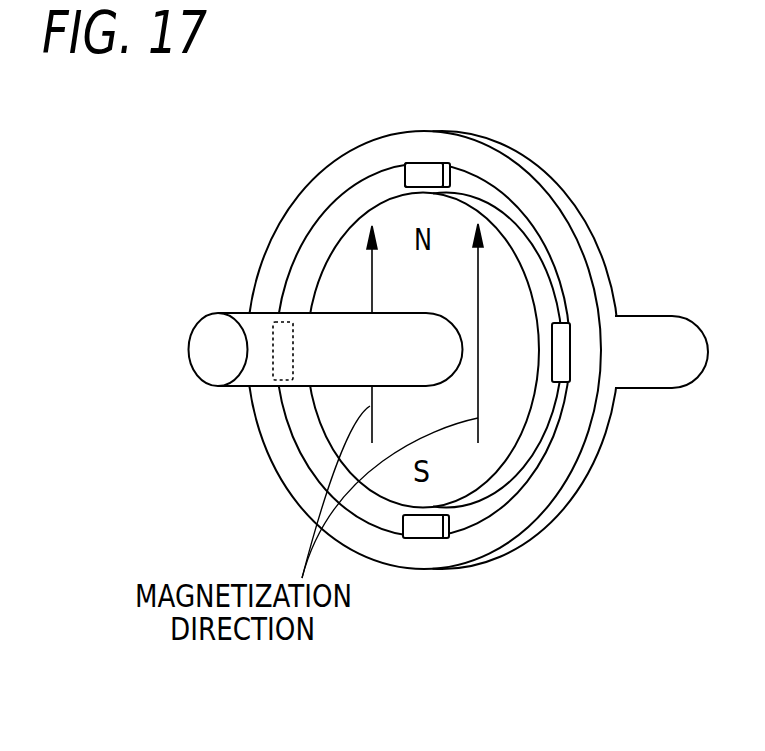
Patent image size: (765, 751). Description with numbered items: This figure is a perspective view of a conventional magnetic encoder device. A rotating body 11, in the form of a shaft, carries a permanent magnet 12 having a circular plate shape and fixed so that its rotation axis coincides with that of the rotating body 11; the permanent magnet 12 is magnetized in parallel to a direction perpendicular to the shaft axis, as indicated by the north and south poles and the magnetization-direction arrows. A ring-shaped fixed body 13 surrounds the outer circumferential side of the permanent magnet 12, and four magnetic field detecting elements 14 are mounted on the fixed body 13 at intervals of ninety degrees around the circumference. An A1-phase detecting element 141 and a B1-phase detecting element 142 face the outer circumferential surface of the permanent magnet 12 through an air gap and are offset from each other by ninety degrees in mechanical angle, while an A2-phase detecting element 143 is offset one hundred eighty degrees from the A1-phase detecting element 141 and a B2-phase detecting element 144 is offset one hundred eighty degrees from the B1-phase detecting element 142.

The rotating body 11 is at (218, 338).
The permanent magnet 12 is at (353, 278).
The fixed body 13 is at (572, 292).
The magnetic field detecting elements 14 is at (424, 175).
The A1-phase detecting element 141 is at (413, 173).
The B1-phase detecting element 142 is at (560, 362).
The A2-phase detecting element 143 is at (425, 528).
The B2-phase detecting element 144 is at (275, 360).